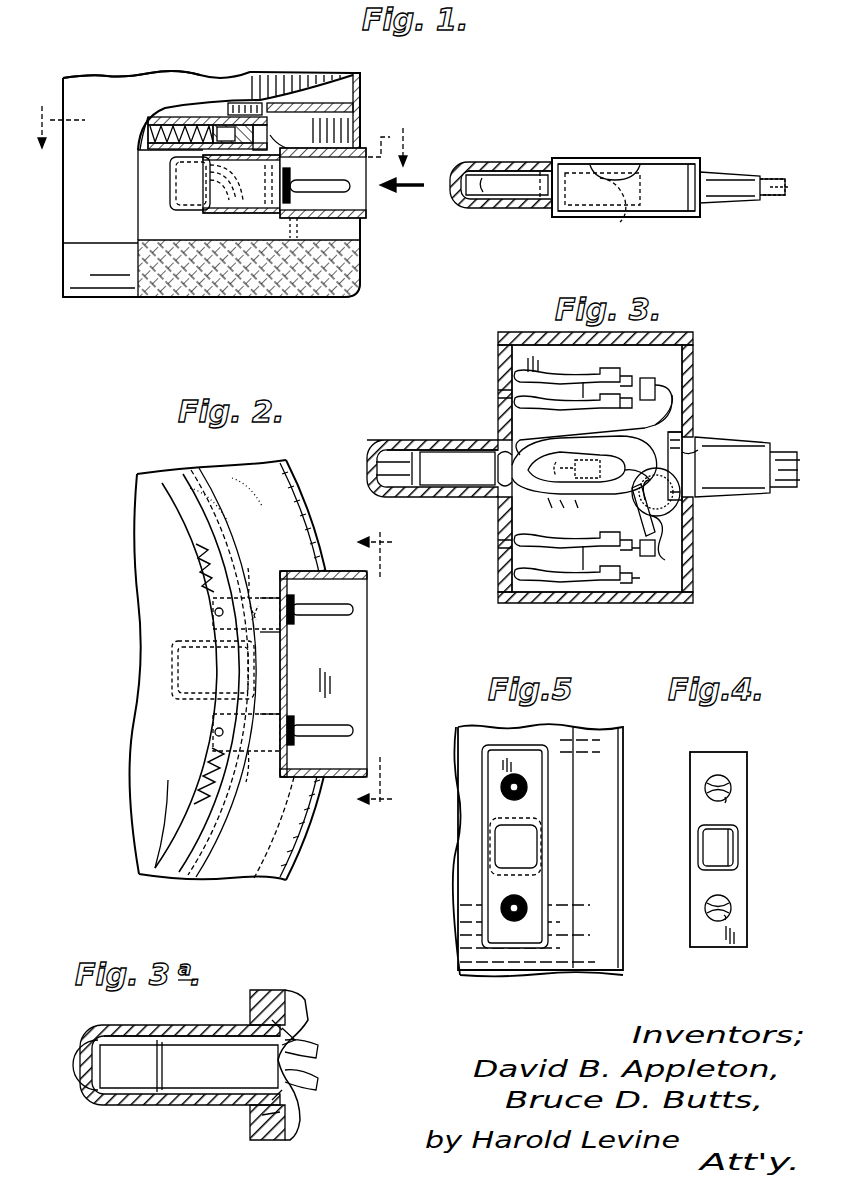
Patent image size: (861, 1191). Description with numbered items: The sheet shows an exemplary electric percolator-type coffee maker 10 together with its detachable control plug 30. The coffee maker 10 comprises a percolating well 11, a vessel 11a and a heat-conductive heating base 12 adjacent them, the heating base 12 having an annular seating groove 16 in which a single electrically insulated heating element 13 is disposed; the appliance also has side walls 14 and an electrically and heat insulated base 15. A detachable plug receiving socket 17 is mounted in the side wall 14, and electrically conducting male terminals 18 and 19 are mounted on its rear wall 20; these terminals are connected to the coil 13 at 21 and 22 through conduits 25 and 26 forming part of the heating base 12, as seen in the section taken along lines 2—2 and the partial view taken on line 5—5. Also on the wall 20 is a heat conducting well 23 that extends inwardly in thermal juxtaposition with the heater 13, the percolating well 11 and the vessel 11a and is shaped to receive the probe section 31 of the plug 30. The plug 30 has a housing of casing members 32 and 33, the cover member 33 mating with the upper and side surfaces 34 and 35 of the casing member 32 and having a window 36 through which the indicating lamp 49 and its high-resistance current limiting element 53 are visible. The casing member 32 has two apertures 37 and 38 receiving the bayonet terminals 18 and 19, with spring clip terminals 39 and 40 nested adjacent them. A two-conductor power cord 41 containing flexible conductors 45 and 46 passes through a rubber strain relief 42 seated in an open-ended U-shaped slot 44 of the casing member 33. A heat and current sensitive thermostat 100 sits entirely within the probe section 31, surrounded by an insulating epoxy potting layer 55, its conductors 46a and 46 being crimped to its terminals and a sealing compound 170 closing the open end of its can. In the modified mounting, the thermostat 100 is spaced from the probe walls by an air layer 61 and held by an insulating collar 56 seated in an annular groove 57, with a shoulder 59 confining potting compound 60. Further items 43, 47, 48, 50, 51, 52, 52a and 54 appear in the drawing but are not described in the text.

In FIG. 1, the electric percolator-type coffee maker 10 is at (376, 75).
In FIG. 2, the electric percolator-type coffee maker 10 is at (329, 472).
In FIG. 1, the percolating well 11 is at (212, 103).
In FIG. 1, the vessel 11a is at (310, 100).
In FIG. 1, the heating base 12 is at (160, 150).
In FIG. 2, the heating base 12 is at (150, 613).
In FIG. 1, the electrical heating element 13 is at (170, 115).
In FIG. 2, the electrical heating element 13 is at (203, 593).
In FIG. 1, the side wall 14 is at (156, 84).
In FIG. 2, the side wall 14 is at (326, 518).
In FIG. 5, the side wall 14 is at (530, 968).
In FIG. 1, the insulated base 15 is at (265, 292).
In FIG. 2, the insulated base 15 is at (190, 475).
In FIG. 5, the insulated base 15 is at (606, 968).
In FIG. 1, the annular seating groove 16 is at (229, 125).
In FIG. 2, the annular seating groove 16 is at (194, 806).
In FIG. 1, the plug receiving socket 17 is at (366, 214).
In FIG. 2, the plug receiving socket 17 is at (368, 578).
In FIG. 5, the plug receiving socket 17 is at (492, 746).
In FIG. 1, the male terminal 18 is at (316, 186).
In FIG. 2, the male terminal 18 is at (328, 730).
In FIG. 5, the male terminal 18 is at (512, 908).
In FIG. 2, the male terminal 19 is at (328, 608).
In FIG. 5, the male terminal 19 is at (512, 787).
In FIG. 1, the rear wall 20 is at (296, 219).
In FIG. 2, the rear wall 20 is at (290, 640).
In FIG. 5, the rear wall 20 is at (495, 760).
In FIG. 2, the connection 21 is at (246, 750).
In FIG. 1, the connection 22 is at (248, 222).
In FIG. 2, the connection 22 is at (246, 596).
In FIG. 1, the heat conducting well 23 is at (180, 190).
In FIG. 2, the heat conducting well 23 is at (282, 655).
In FIG. 5, the heat conducting well 23 is at (500, 844).
In FIG. 1, the conduit 25 is at (268, 152).
In FIG. 2, the conduit 25 is at (268, 713).
In FIG. 2, the conduit 26 is at (268, 596).
In FIG. 1, the section line 2— 2 is at (220, 126).
In FIG. 2, the section line 5— 5 is at (384, 672).
In FIG. 3, the detachable control plug 30 is at (694, 126).
In FIG. 4, the detachable control plug 30 is at (763, 749).
In FIG. 3, the probe section 31 is at (462, 162).
In FIG. 4, the probe section 31 is at (704, 846).
In FIG. 3A, the probe section 31 is at (82, 1095).
In FIG. 3, the casing member 32 is at (590, 212).
In FIG. 4, the casing member 32 is at (704, 758).
In FIG. 3A, the casing member 32 is at (262, 1140).
In FIG. 3, the casing member 33 is at (690, 162).
In FIG. 3, the upper surface 34 is at (650, 165).
In FIG. 3, the side surface 35 is at (696, 190).
In FIG. 3, the window 36 is at (610, 165).
In FIG. 3, the aperture 37 is at (544, 170).
In FIG. 4, the aperture 37 is at (706, 910).
In FIG. 3, the aperture 38 is at (500, 388).
In FIG. 4, the aperture 38 is at (706, 788).
In FIG. 3, the spring clip terminal 39 is at (622, 220).
In FIG. 4, the spring clip terminal 39 is at (730, 915).
In FIG. 3, the spring clip terminal 40 is at (568, 373).
In FIG. 4, the spring clip terminal 40 is at (730, 800).
In FIG. 3, the power cord 41 is at (778, 180).
In FIG. 3, the strain relief 42 is at (735, 178).
In FIG. 3, the plug flange 43 is at (692, 432).
In FIG. 3, the U-shaped slot 44 is at (695, 455).
In FIG. 3, the flexible conductor 45 is at (700, 515).
In FIG. 3, the flexible conductor 46 is at (655, 464).
In FIG. 3A, the flexible conductor 46 is at (318, 1080).
In FIG. 3, the conductor 46a is at (555, 436).
In FIG. 3A, the conductor 46a is at (348, 1046).
In FIG. 3, the lower terminal block 47 is at (655, 556).
In FIG. 3, the upper terminal block 48 is at (645, 378).
In FIG. 3, the indicating lamp 49 is at (580, 460).
In FIG. 3, the bulb base 50 is at (622, 462).
In FIG. 3, the upper lead wire 51 is at (655, 386).
In FIG. 3, the bulb socket 52 is at (583, 472).
In FIG. 3, the lower lead wire 52a is at (695, 540).
In FIG. 3, the current limiting element 53 is at (632, 512).
In FIG. 3, the terminal connection 54 is at (640, 565).
In FIG. 3, the adhesive compound layer 55 is at (502, 166).
In FIG. 3A, the collar 56 is at (280, 992).
In FIG. 3A, the annular seating groove 57 is at (252, 1012).
In FIG. 3A, the shoulder 59 is at (286, 1115).
In FIG. 3A, the potting compound 60 is at (302, 1036).
In FIG. 3A, the air layer 61 is at (128, 1038).
In FIG. 3, the thermostatic control assembly 100 is at (491, 196).
In FIG. 3A, the thermostatic control assembly 100 is at (194, 1038).
In FIG. 3, the sealing compound 170 is at (500, 492).